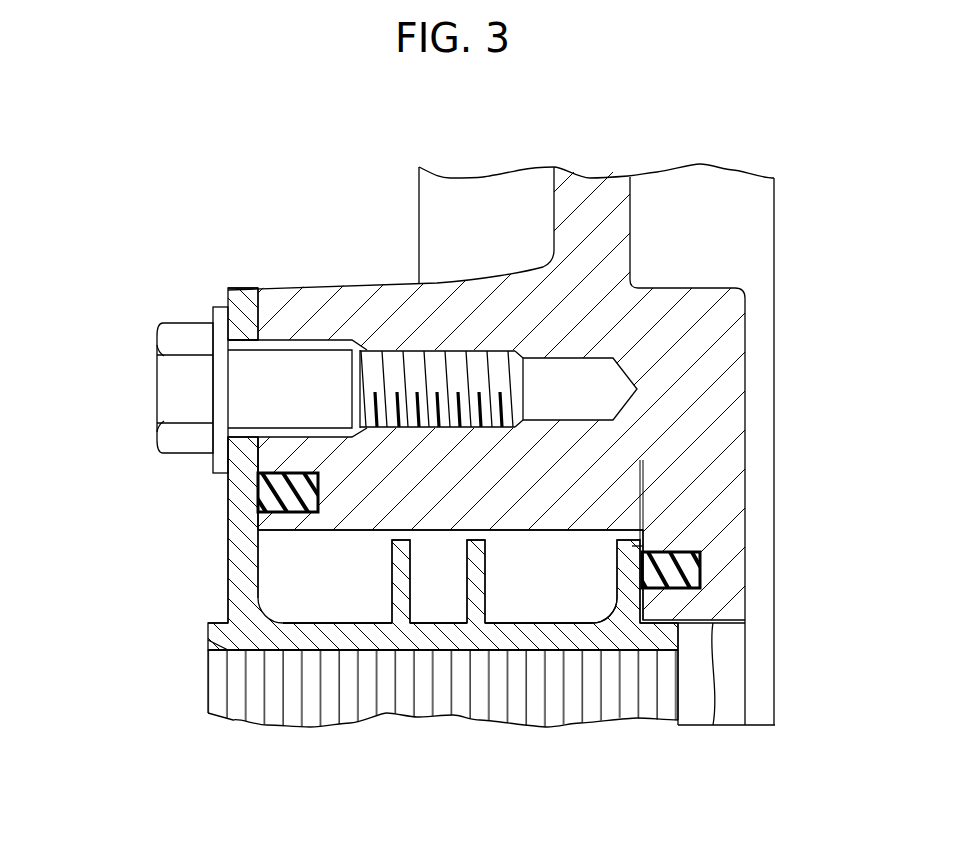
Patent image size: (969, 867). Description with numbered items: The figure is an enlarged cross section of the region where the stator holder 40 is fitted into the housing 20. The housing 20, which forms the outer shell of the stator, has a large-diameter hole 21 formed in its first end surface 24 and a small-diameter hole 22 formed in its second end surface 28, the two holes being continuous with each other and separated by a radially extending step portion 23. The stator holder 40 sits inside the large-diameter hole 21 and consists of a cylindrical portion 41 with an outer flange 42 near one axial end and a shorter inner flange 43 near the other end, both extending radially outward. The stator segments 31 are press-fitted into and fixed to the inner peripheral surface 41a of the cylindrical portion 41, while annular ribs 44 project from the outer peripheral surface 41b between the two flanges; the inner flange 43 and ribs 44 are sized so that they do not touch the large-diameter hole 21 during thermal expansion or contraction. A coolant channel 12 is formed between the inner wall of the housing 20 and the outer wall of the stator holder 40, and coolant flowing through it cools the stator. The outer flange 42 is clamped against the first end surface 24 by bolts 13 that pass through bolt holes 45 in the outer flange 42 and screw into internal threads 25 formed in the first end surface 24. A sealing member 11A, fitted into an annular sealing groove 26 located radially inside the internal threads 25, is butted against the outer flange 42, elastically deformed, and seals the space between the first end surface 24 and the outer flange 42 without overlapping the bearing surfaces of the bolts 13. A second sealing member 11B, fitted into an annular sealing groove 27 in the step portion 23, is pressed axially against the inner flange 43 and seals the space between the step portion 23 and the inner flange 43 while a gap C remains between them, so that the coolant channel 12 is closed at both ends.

The housing 20 is at (327, 286).
The internal threads 25 is at (428, 351).
The first end surface 24 is at (228, 298).
The bolt holes 45 is at (243, 350).
The bolts 13 is at (168, 392).
The sealing member 11A is at (272, 492).
The sealing member 11B is at (693, 568).
The outer flange 42 is at (238, 535).
The stator holder 40 is at (218, 603).
The inner flange 43 is at (632, 546).
The second end surface 28 is at (745, 547).
The sealing groove 26 is at (307, 512).
The large-diameter hole 21 is at (337, 532).
The cylindrical portion 41 is at (337, 643).
The inner peripheral surface 41a is at (392, 652).
The annular ribs 44 is at (463, 593).
The outer peripheral surface 41b is at (523, 615).
The coolant channel 12 is at (563, 577).
The step portion 23 is at (647, 598).
The stator segments 31 is at (648, 726).
The sealing groove 27 is at (648, 548).
The small-diameter hole 22 is at (722, 708).
The gap C is at (652, 495).